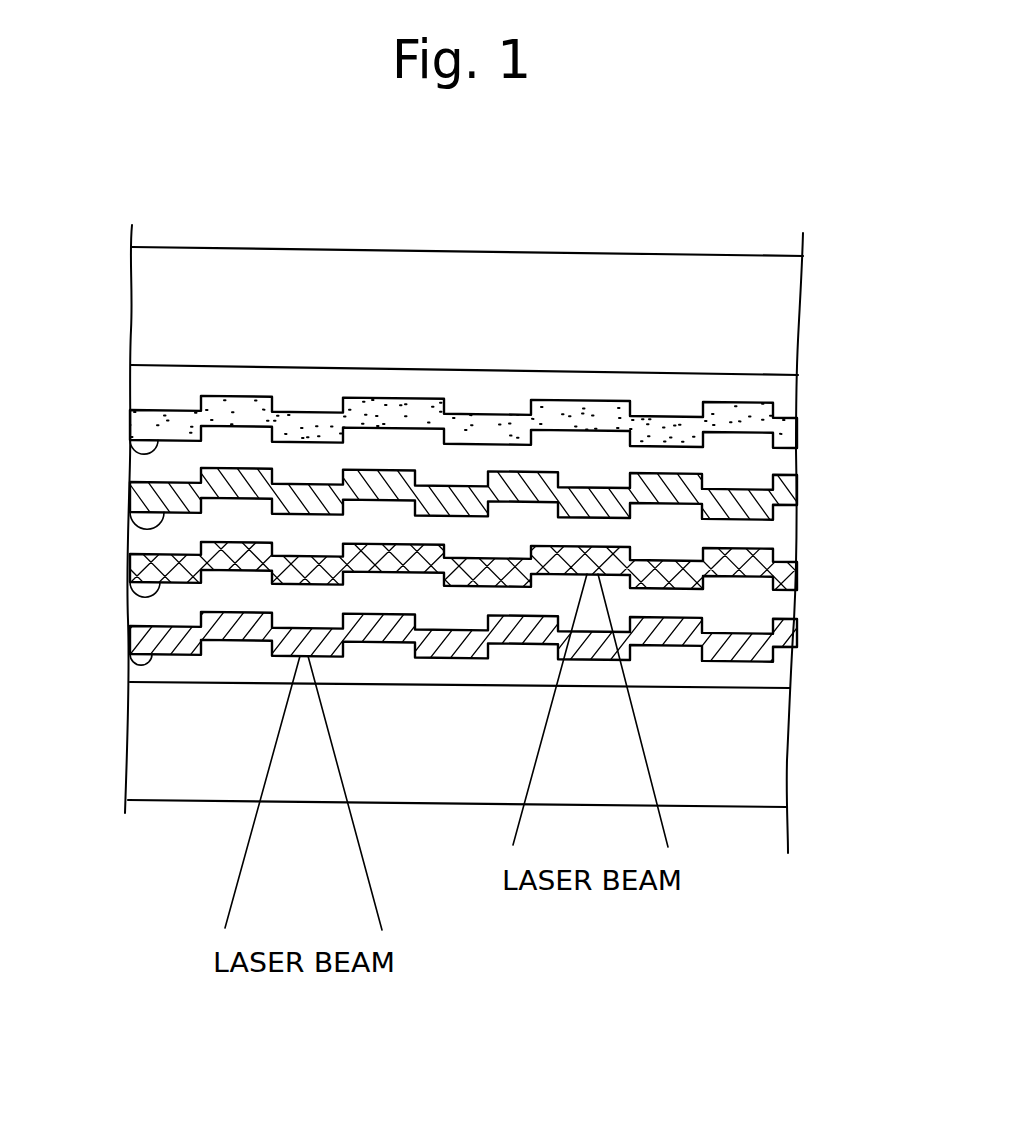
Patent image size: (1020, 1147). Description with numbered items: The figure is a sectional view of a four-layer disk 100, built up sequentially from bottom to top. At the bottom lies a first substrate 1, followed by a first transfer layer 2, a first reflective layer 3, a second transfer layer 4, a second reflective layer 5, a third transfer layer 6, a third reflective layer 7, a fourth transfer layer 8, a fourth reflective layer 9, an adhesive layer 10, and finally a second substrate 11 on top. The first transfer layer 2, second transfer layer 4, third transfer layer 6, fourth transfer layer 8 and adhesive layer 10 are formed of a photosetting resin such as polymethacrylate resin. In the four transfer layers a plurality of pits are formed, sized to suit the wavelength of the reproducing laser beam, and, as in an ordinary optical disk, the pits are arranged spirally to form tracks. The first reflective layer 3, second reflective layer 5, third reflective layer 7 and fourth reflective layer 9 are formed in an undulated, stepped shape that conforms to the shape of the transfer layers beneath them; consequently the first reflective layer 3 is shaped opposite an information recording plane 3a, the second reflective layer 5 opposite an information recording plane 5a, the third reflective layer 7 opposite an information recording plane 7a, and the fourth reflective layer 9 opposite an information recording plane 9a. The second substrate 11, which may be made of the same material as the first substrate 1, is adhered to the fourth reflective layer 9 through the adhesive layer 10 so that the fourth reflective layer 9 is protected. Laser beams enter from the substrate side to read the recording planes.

The four-layer disk 100 is at (688, 222).
The first substrate 1 is at (763, 752).
The first transfer layer 2 is at (780, 667).
The first reflective layer 3 is at (790, 633).
The information recording plane 3a is at (130, 666).
The second transfer layer 4 is at (783, 601).
The second reflective layer 5 is at (792, 569).
The information recording plane 5a is at (130, 601).
The third transfer layer 6 is at (783, 524).
The third reflective layer 7 is at (790, 492).
The information recording plane 7a is at (130, 525).
The fourth transfer layer 8 is at (782, 457).
The fourth reflective layer 9 is at (790, 424).
The information recording plane 9a is at (130, 450).
The adhesive layer 10 is at (778, 387).
The second substrate 11 is at (782, 311).